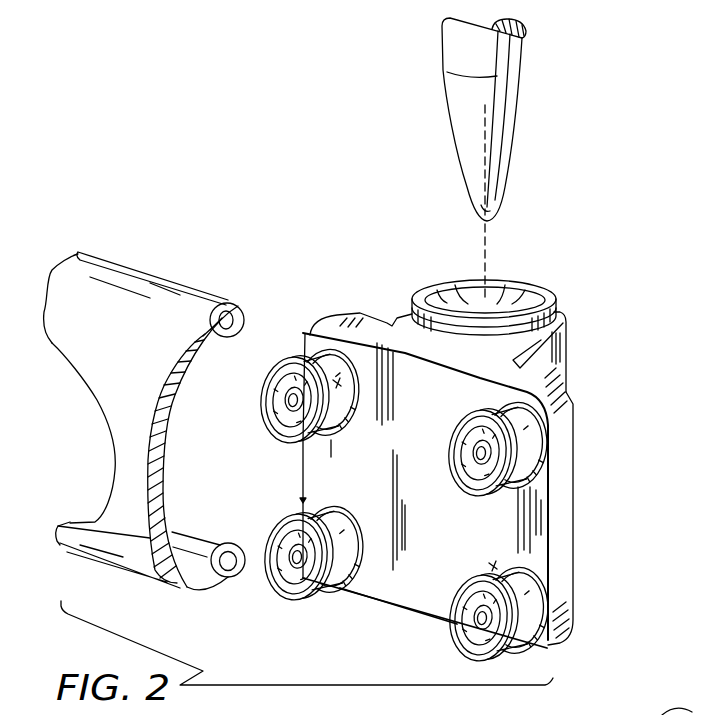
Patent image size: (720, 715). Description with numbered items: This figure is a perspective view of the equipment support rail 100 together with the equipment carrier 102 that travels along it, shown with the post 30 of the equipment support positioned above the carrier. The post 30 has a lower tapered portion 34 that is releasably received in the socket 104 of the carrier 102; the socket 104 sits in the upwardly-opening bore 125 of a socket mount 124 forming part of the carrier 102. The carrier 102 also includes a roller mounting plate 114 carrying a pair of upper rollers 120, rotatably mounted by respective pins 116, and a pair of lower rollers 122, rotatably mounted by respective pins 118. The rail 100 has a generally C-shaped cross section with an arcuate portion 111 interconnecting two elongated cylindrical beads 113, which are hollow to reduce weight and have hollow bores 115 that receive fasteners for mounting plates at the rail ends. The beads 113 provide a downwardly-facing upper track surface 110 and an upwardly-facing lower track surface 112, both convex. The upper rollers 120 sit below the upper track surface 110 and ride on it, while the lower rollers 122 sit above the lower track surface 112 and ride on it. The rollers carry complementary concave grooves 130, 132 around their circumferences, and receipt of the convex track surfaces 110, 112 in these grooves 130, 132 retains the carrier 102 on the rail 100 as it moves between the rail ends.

The post 30 is at (512, 48).
The lower tapered portion 34 is at (498, 157).
The equipment support rail 100 is at (80, 294).
The equipment carrier 102 is at (605, 422).
The socket 104 is at (543, 287).
The upper track surface 110 is at (230, 347).
The arcuate portion 111 is at (110, 382).
The lower track surface 112 is at (230, 545).
The cylindrical beads 113 is at (181, 283).
The roller mounting plate 114 is at (576, 520).
The hollow bores 115 is at (228, 318).
The pins 116 is at (297, 403).
The pins 118 is at (297, 573).
The upper rollers 120 is at (463, 452).
The lower rollers 122 is at (460, 635).
The socket mount 124 is at (566, 353).
The upwardly-opening bore 125 is at (512, 292).
The concave grooves 130 is at (343, 390).
The concave grooves 132 is at (493, 567).